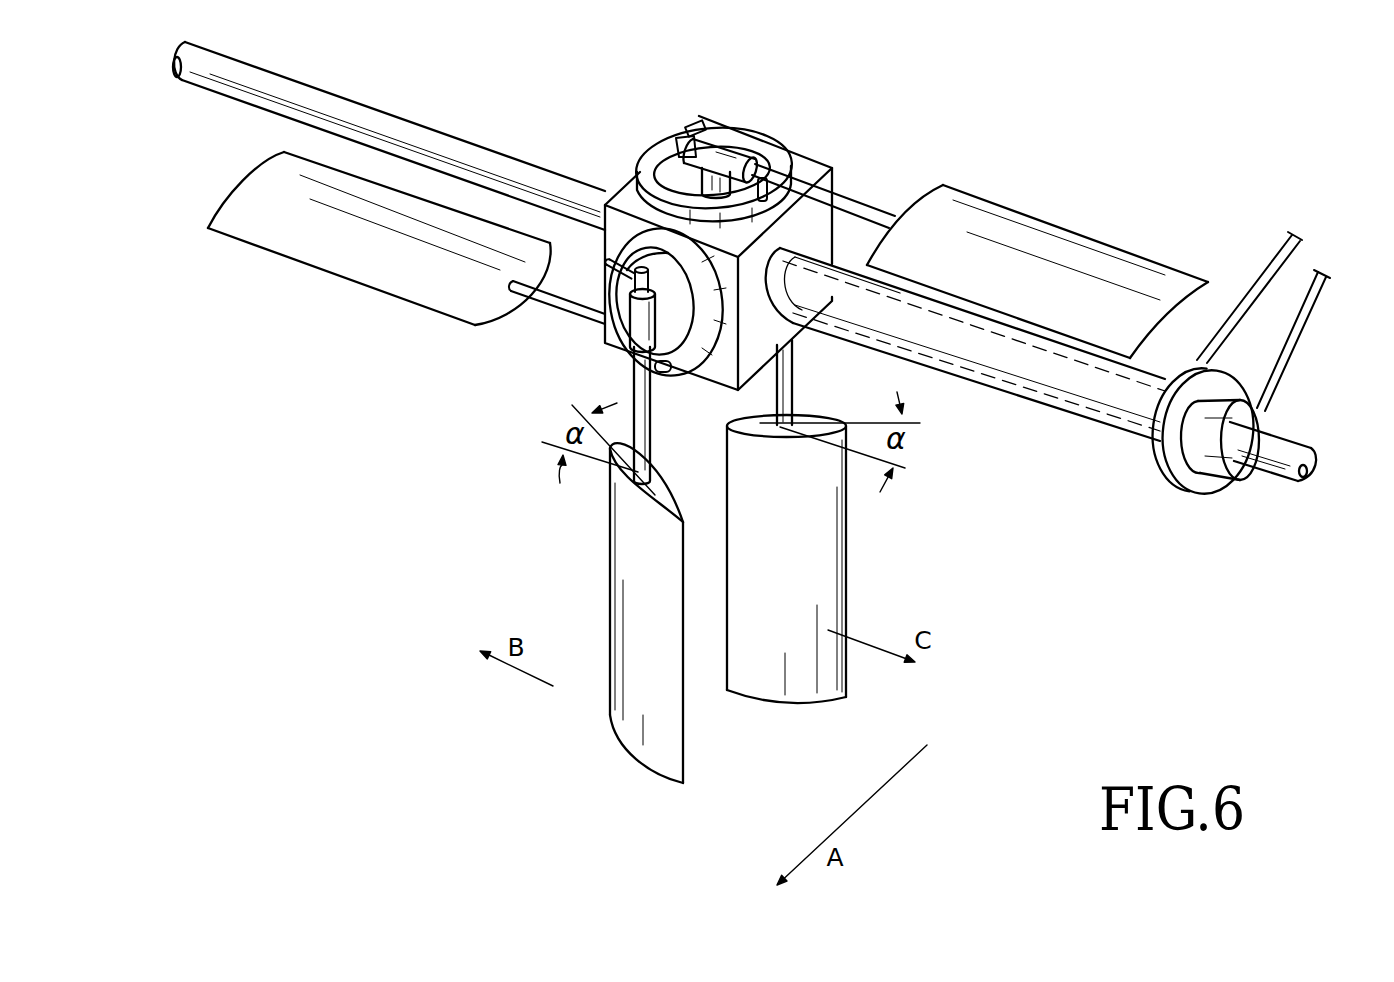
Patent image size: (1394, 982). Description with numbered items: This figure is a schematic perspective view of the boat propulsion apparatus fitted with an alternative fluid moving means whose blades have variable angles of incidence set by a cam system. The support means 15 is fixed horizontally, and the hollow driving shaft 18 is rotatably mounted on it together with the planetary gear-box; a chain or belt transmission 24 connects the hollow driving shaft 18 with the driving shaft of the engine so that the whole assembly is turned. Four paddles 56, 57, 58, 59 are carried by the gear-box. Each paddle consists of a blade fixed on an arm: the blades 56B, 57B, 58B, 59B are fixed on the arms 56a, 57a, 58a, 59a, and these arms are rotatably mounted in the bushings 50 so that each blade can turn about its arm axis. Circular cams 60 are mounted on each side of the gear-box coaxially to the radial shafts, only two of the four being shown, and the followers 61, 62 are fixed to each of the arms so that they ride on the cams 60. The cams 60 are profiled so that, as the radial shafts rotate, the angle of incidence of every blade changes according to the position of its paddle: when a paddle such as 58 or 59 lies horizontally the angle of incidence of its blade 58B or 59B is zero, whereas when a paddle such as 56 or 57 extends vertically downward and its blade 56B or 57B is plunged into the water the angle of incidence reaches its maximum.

The support means 15 is at (192, 78).
The hollow driving shaft 18 is at (1210, 468).
The chain (or belt) transmission 24 is at (1300, 320).
The bushings 50 is at (723, 148).
The paddle 56 is at (579, 571).
The arm 56a is at (642, 403).
The blade 56B is at (610, 730).
The paddle 57 is at (873, 521).
The arm 57a is at (792, 385).
The blade 57B is at (838, 598).
The paddle 58 is at (389, 259).
The arm 58a is at (550, 303).
The blade 58B is at (383, 270).
The paddle 59 is at (1003, 272).
The arm 59a is at (828, 192).
The blade 59B is at (1067, 222).
The circular cams 60 is at (650, 197).
The follower 61 is at (770, 178).
The follower 62 is at (620, 264).